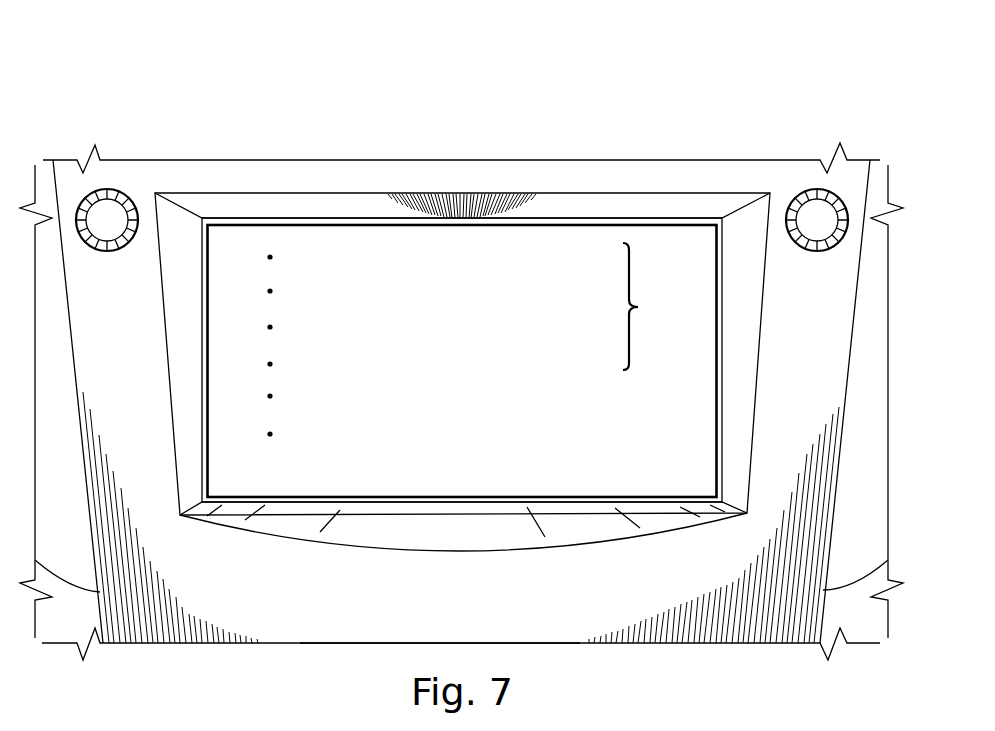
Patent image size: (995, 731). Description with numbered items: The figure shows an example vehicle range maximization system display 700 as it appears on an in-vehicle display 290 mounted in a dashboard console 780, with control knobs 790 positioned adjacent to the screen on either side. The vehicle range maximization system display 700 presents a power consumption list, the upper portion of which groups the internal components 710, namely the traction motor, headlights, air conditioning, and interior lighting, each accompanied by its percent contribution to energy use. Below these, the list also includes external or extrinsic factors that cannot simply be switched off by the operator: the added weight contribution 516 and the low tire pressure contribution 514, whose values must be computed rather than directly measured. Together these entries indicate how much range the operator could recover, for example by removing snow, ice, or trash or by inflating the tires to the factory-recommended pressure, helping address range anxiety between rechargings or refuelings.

The vehicle range maximization system display 700 is at (662, 90).
The control knobs 790 is at (126, 190).
The in-vehicle display 290 is at (249, 255).
The internal components 710 is at (657, 306).
The added weight contribution 516 is at (620, 397).
The low tire pressure contribution 514 is at (620, 432).
The dashboard console 780 is at (305, 637).